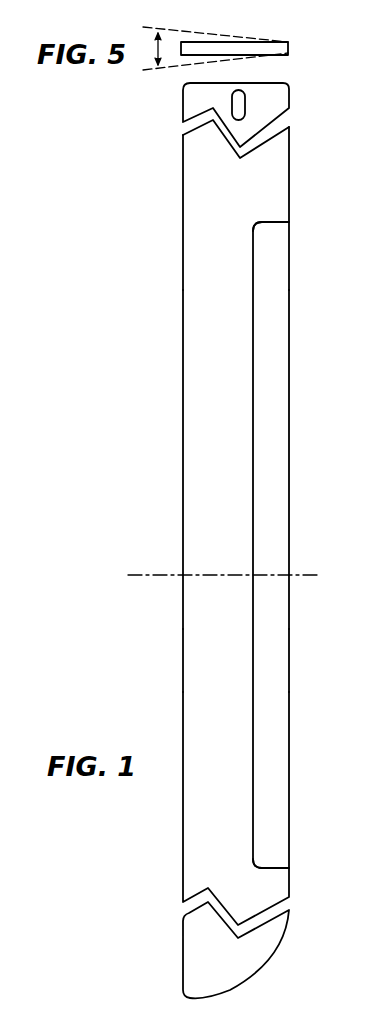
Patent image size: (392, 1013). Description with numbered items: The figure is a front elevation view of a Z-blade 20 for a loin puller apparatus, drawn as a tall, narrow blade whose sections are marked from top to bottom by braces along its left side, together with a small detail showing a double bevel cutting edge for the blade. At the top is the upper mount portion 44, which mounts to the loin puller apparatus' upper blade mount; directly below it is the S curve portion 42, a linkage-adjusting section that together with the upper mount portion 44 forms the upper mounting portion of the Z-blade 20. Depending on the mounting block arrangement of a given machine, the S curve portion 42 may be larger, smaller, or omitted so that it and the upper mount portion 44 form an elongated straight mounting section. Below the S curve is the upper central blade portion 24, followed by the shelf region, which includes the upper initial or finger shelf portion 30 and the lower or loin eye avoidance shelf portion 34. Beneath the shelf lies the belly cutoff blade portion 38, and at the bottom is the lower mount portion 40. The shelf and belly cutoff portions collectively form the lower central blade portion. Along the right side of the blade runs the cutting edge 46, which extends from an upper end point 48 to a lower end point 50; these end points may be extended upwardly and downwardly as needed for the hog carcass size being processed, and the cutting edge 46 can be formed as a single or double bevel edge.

The Z-blade member 20 is at (100, 152).
The upper mount portion 44 is at (176, 85).
The S curve portion 42 is at (176, 137).
The upper central blade portion 24 is at (176, 298).
The upper initial or finger shelf portion 30 is at (176, 578).
The lower or loin eye avoidance shelf portion 34 is at (176, 631).
The belly cutoff blade portion 38 is at (176, 693).
The lower mount portion 40 is at (176, 910).
The cutting edge 46 is at (277, 447).
The upper end point 48 is at (272, 222).
The lower end point 50 is at (270, 868).